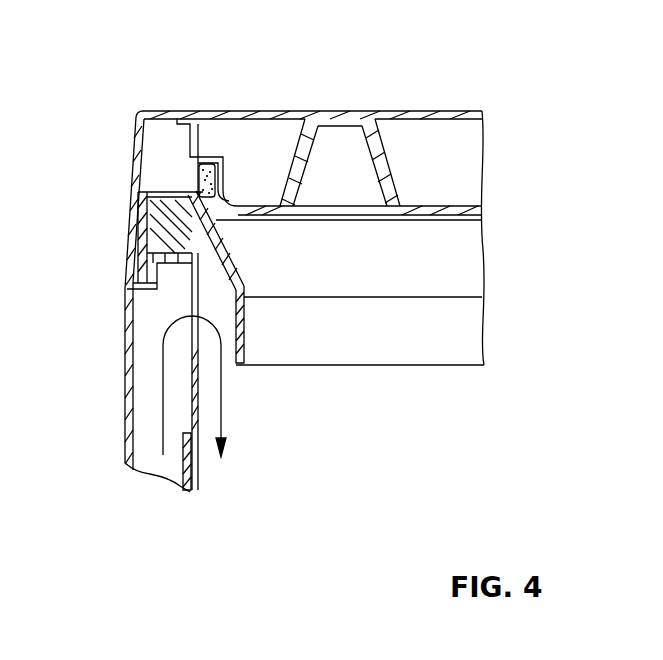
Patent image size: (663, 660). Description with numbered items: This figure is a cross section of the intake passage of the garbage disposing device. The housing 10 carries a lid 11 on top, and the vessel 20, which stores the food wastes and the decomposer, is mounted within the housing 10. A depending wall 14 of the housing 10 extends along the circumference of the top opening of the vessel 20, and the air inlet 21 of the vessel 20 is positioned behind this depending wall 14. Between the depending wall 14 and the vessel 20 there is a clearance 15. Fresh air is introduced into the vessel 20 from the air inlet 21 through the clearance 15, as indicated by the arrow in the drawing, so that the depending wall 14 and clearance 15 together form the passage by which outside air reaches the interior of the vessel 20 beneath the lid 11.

The housing 10 is at (127, 425).
The lid 11 is at (288, 112).
The depending wall 14 is at (240, 347).
The clearance 15 is at (230, 317).
The vessel 20 is at (198, 470).
The air inlet 21 is at (193, 297).